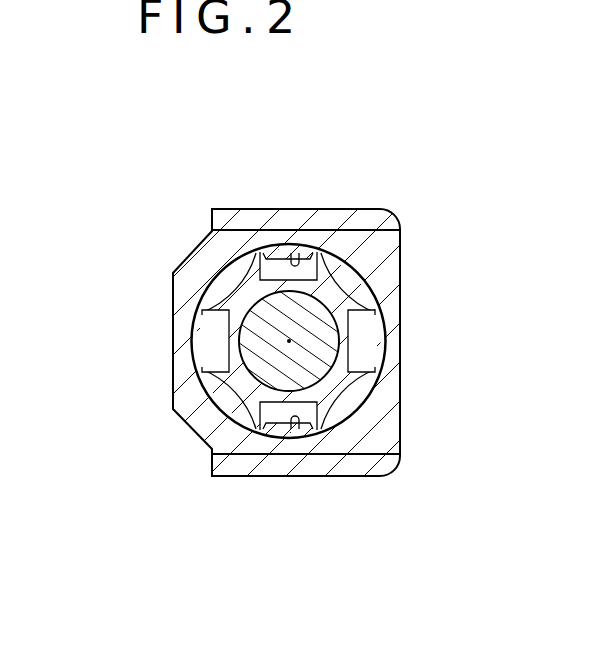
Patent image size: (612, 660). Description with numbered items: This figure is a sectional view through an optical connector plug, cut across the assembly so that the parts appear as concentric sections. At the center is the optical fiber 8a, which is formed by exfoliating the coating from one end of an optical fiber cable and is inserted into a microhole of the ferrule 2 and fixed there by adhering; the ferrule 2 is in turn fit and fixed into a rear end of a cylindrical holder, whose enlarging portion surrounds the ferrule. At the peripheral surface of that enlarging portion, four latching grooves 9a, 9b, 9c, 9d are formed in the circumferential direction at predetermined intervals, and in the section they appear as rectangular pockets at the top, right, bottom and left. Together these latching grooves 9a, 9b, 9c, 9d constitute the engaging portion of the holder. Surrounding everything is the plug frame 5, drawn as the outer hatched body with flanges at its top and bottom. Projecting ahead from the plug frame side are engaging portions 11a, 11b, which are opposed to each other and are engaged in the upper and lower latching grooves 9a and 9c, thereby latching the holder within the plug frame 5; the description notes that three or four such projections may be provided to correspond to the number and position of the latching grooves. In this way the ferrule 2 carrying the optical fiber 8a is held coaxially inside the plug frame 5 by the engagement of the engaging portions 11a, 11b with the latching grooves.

The ferrule 2 is at (266, 311).
The plug frame 5 is at (172, 311).
The optical fiber 8a is at (289, 341).
The latching groove 9a is at (276, 250).
The latching groove 9b is at (352, 338).
The latching groove 9c is at (283, 437).
The latching groove 9d is at (229, 346).
The engaging portion 11a is at (298, 250).
The engaging portion 11b is at (305, 437).